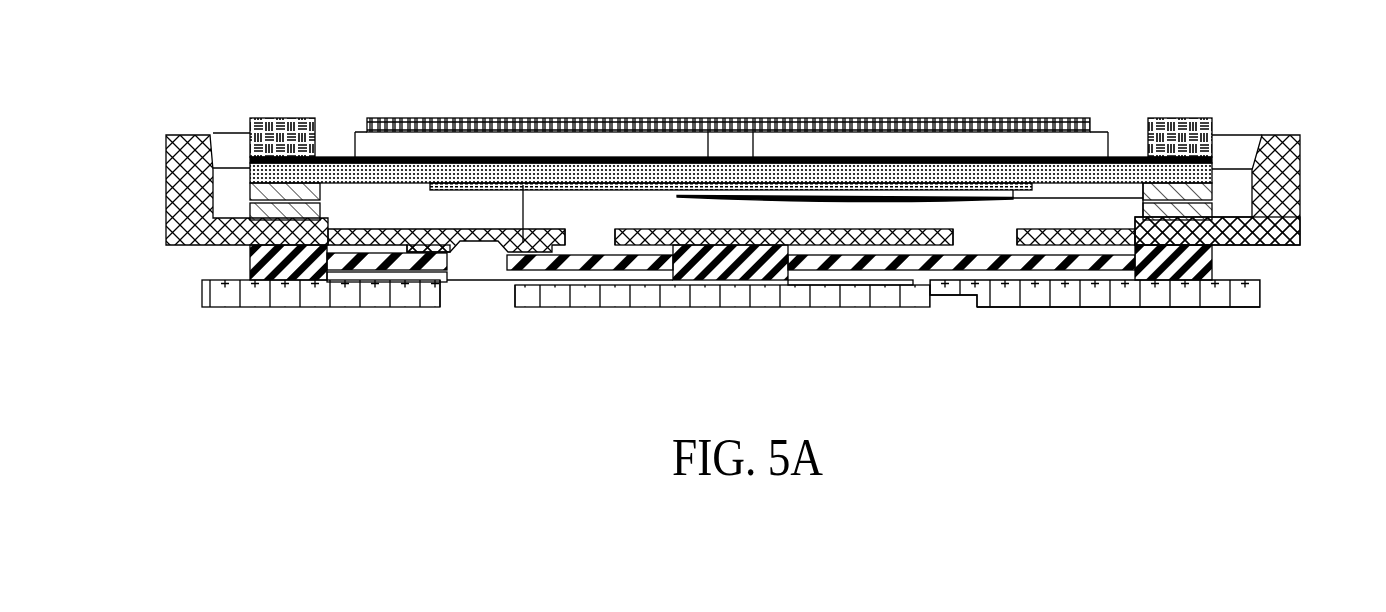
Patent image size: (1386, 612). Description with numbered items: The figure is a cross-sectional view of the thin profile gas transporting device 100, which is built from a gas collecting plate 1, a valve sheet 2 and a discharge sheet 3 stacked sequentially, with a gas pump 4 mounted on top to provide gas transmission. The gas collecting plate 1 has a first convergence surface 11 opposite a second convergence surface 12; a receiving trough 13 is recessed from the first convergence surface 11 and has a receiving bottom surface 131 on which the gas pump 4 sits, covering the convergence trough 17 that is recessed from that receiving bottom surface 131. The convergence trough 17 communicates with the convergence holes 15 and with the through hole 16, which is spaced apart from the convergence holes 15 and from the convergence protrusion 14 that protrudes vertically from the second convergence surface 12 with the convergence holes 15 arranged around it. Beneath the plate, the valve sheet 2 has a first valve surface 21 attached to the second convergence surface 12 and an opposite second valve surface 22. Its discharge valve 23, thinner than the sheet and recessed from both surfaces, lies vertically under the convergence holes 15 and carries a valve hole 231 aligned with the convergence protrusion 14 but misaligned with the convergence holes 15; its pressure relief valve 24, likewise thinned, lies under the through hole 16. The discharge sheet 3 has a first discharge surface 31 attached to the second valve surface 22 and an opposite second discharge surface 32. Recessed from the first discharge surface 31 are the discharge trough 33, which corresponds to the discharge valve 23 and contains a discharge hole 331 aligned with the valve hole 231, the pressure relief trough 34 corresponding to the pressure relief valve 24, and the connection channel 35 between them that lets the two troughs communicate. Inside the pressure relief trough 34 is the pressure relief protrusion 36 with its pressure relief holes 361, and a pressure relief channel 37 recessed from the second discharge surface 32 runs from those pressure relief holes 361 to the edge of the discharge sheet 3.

The thin profile gas transporting device 100 is at (757, 44).
The gas collecting plate 1 is at (163, 133).
The first convergence surface 11 is at (1283, 137).
The second convergence surface 12 is at (1268, 246).
The receiving trough 13 is at (1233, 185).
The receiving bottom surface 131 is at (1238, 217).
The convergence protrusion 14 is at (523, 185).
The convergence holes 15 is at (590, 240).
The through hole 16 is at (992, 242).
The convergence trough 17 is at (1090, 228).
The valve sheet 2 is at (193, 263).
The first valve surface 21 is at (262, 230).
The second valve surface 22 is at (288, 277).
The discharge valve 23 is at (368, 270).
The valve hole 231 is at (460, 265).
The pressure relief valve 24 is at (1082, 268).
The discharge sheet 3 is at (193, 302).
The first discharge surface 31 is at (1220, 280).
The second discharge surface 32 is at (1222, 307).
The discharge trough 33 is at (540, 282).
The discharge hole 331 is at (490, 305).
The pressure relief trough 34 is at (855, 282).
The connection channel 35 is at (715, 280).
The pressure relief protrusion 36 is at (1038, 292).
The pressure relief holes 361 is at (957, 288).
The pressure relief channel 37 is at (1160, 300).
The gas pump 4 is at (367, 102).